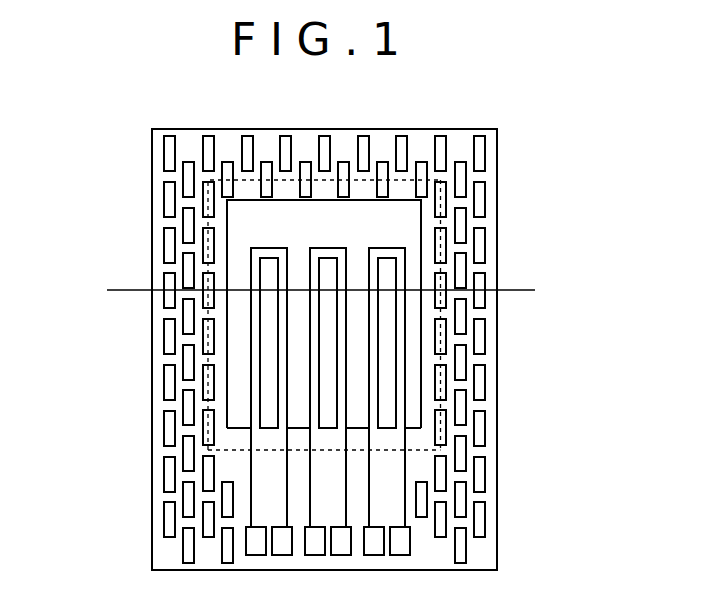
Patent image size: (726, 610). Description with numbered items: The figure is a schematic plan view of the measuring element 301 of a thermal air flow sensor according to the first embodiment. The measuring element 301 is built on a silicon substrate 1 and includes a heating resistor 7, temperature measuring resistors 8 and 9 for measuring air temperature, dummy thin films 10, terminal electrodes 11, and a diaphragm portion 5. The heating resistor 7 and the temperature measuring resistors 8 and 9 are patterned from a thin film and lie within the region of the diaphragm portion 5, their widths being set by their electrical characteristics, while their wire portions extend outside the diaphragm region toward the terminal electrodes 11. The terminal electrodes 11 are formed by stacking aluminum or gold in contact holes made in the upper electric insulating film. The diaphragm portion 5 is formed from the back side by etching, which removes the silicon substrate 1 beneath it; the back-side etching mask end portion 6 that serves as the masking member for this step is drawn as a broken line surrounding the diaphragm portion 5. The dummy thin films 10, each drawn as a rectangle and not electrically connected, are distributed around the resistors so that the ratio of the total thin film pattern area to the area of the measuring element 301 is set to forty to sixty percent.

The measuring element 301 is at (327, 337).
The silicon substrate 1 is at (475, 547).
The dummy thin films 10 is at (190, 222).
The diaphragm portion 5 is at (392, 214).
The back-side etching mask end portion 6 is at (440, 220).
The temperature measuring resistor 8 is at (250, 356).
The heating resistor 7 is at (318, 395).
The temperature measuring resistor 9 is at (400, 412).
The terminal electrodes 11 is at (255, 540).